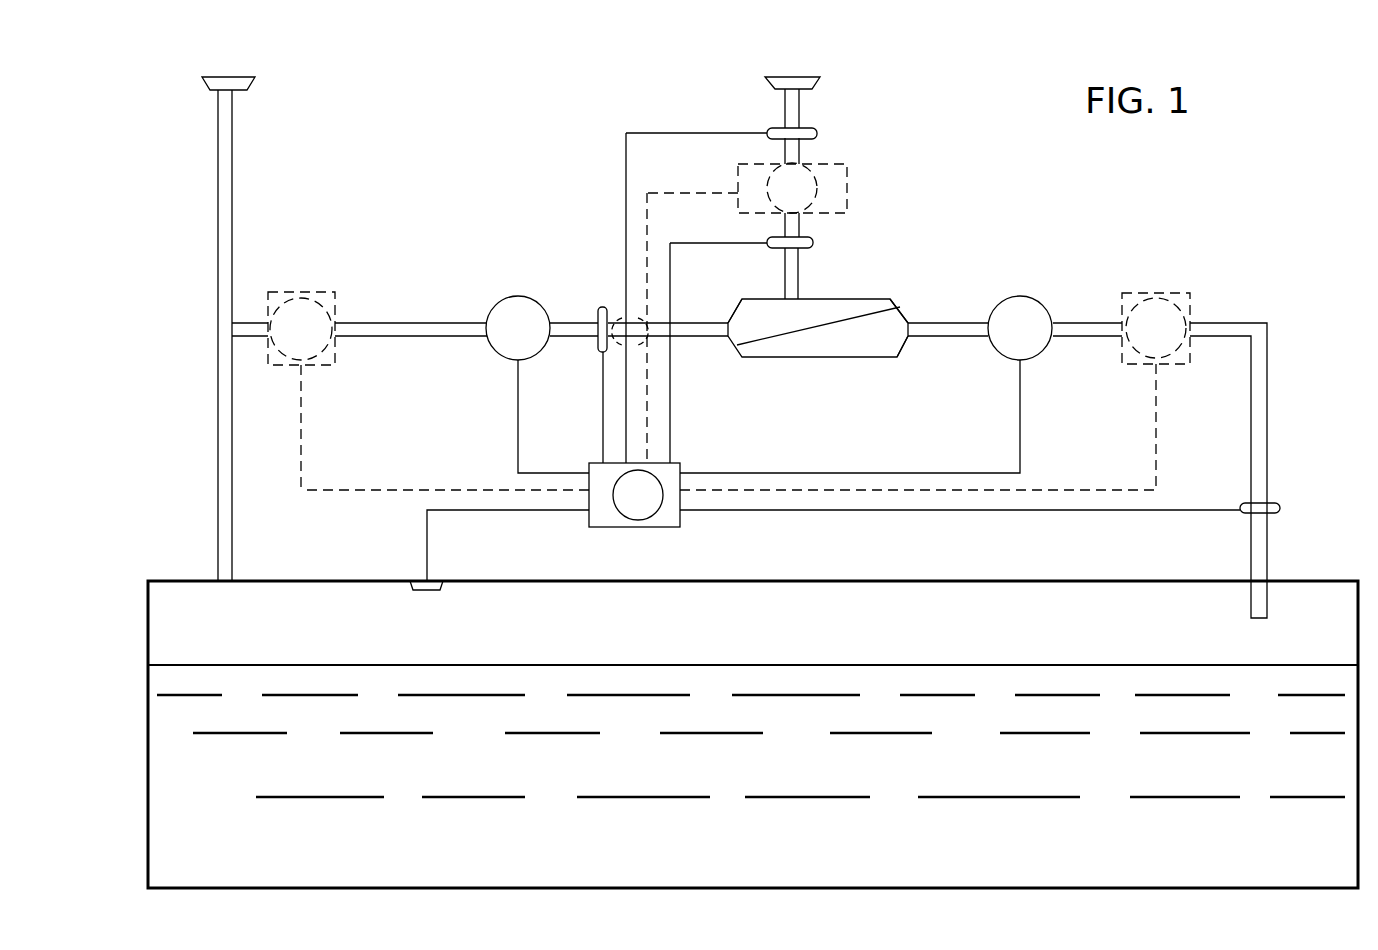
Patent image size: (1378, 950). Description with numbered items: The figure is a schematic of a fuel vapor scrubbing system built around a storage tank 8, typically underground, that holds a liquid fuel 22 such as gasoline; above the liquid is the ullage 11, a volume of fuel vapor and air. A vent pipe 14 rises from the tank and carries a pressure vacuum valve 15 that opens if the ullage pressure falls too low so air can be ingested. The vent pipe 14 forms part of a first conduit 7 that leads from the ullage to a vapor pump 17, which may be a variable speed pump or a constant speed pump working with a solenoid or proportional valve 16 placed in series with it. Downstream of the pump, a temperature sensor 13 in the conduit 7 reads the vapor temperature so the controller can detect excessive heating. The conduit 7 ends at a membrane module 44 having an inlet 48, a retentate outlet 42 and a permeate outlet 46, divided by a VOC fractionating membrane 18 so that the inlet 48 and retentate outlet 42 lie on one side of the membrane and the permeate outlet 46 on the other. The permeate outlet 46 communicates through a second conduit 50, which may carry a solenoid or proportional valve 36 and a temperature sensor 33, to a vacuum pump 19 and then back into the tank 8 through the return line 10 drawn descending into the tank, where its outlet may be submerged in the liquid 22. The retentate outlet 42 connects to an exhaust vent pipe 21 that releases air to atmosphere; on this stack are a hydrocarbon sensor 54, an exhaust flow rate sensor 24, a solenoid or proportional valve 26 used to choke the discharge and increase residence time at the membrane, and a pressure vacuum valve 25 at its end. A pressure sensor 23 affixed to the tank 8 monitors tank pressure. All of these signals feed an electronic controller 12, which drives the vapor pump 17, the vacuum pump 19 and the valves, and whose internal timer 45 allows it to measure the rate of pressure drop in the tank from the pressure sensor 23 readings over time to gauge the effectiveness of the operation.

The conduit 7 is at (397, 323).
The storage tank 8 is at (148, 600).
The return conduit 10 is at (1268, 437).
The ullage 11 is at (703, 641).
The electronic controller 12 is at (668, 527).
The temperature sensor 13 is at (600, 305).
The vent pipe 14 is at (218, 432).
The pressure vacuum valve 15 is at (247, 82).
The solenoid or proportional valve 16 is at (325, 292).
The vapor pump 17 is at (522, 297).
The VOC fractionating membrane 18 is at (840, 323).
The vacuum pump 19 is at (1040, 300).
The vent pipe 21 is at (800, 155).
The liquid fuel 22 is at (708, 774).
The pressure sensor 23 is at (422, 580).
The exhaust flow rate sensor 24 is at (815, 128).
The pressure vacuum valve 25 is at (772, 77).
The solenoid or proportional valve 26 is at (852, 182).
The temperature sensor 33 is at (1280, 508).
The solenoid or proportional valve 36 is at (1180, 293).
The retentate outlet 42 is at (798, 287).
The membrane module 44 is at (890, 299).
The internal timer 45 is at (652, 509).
The permeate outlet 46 is at (908, 340).
The inlet 48 is at (735, 303).
The second conduit 50 is at (942, 323).
The hydrocarbon sensor 54 is at (815, 243).